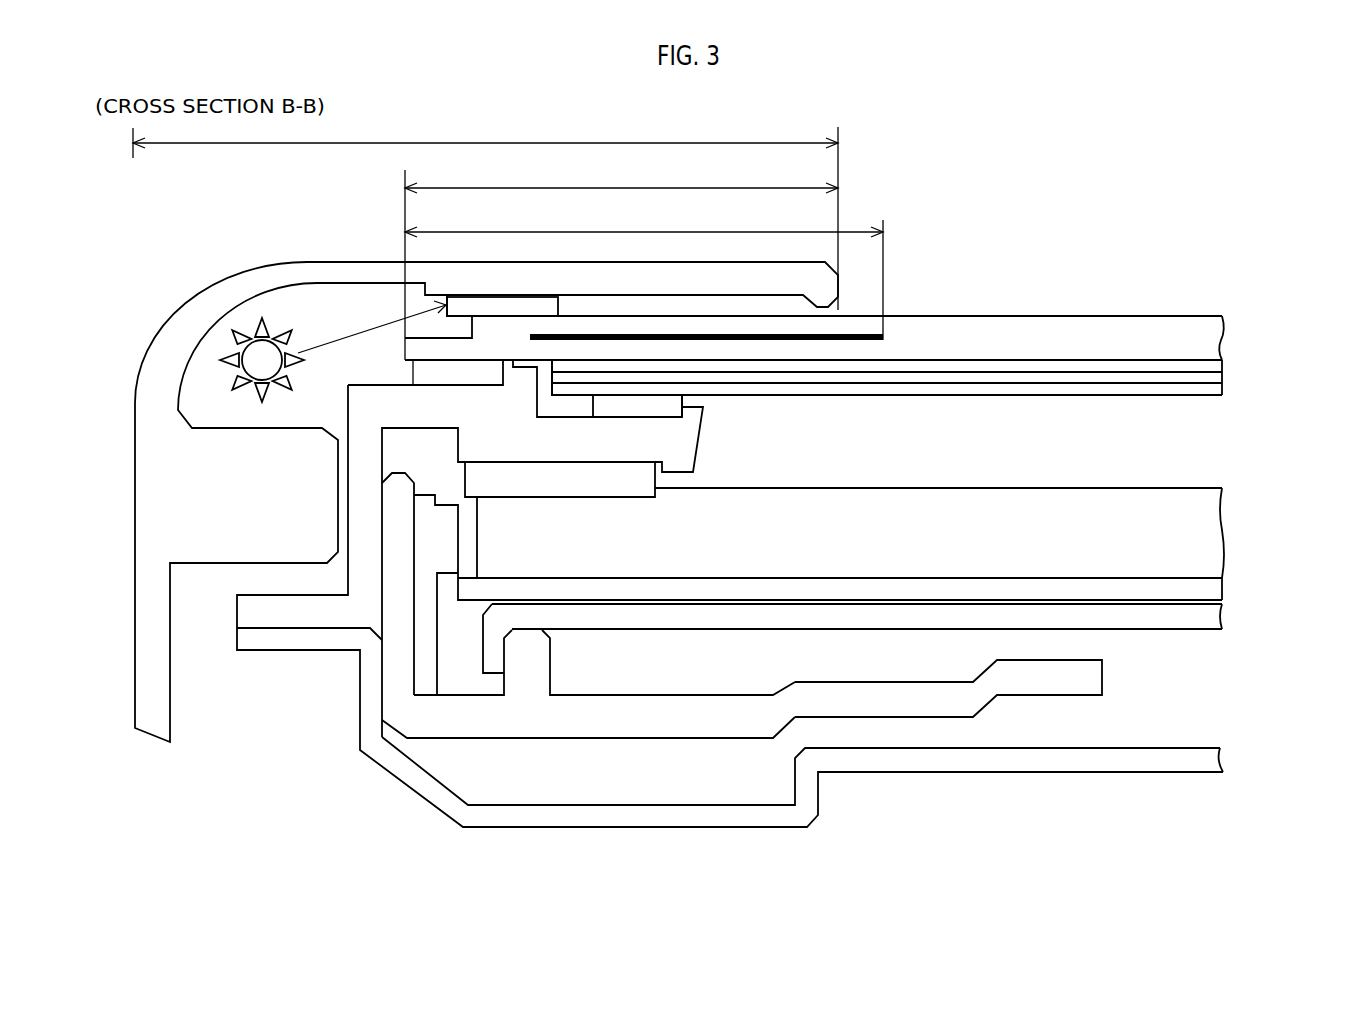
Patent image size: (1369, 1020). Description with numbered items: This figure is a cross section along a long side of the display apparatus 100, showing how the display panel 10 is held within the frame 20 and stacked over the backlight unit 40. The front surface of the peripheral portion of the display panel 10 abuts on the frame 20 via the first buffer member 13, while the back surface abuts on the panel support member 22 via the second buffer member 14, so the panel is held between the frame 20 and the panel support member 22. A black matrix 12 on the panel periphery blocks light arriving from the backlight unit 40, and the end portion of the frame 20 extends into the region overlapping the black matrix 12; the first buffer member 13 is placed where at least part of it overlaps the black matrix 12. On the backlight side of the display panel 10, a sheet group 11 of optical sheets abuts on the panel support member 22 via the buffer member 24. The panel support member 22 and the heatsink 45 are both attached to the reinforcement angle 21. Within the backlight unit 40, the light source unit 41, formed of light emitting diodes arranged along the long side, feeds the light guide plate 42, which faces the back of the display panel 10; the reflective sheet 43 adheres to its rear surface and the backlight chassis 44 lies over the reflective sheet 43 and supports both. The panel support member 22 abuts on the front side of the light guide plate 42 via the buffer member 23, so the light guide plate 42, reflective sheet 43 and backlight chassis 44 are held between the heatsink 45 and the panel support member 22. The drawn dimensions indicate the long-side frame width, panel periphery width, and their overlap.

The display apparatus 100 is at (1092, 182).
The display panel 10 is at (1210, 341).
The sheet group 11 is at (1230, 362).
The black matrix 12 is at (886, 337).
The first buffer member 13 is at (462, 305).
The second buffer member 14 is at (413, 371).
The frame 20 is at (220, 296).
The reinforcement angle 21 is at (1000, 763).
The panel support member 22 is at (692, 447).
The buffer member (spacer) 23 is at (647, 482).
The buffer member (spacer) 24 is at (682, 400).
The backlight unit 40 is at (1288, 562).
The light source unit 41 is at (428, 557).
The light guide plate 42 is at (1212, 539).
The reflective sheet 43 is at (1212, 589).
The backlight chassis 44 is at (1212, 618).
The heatsink 45 is at (1093, 678).